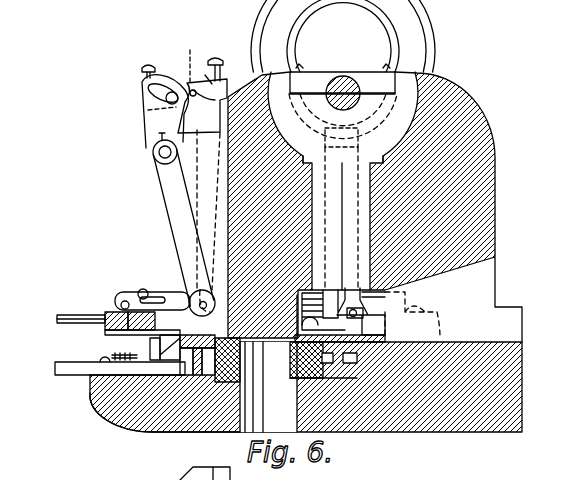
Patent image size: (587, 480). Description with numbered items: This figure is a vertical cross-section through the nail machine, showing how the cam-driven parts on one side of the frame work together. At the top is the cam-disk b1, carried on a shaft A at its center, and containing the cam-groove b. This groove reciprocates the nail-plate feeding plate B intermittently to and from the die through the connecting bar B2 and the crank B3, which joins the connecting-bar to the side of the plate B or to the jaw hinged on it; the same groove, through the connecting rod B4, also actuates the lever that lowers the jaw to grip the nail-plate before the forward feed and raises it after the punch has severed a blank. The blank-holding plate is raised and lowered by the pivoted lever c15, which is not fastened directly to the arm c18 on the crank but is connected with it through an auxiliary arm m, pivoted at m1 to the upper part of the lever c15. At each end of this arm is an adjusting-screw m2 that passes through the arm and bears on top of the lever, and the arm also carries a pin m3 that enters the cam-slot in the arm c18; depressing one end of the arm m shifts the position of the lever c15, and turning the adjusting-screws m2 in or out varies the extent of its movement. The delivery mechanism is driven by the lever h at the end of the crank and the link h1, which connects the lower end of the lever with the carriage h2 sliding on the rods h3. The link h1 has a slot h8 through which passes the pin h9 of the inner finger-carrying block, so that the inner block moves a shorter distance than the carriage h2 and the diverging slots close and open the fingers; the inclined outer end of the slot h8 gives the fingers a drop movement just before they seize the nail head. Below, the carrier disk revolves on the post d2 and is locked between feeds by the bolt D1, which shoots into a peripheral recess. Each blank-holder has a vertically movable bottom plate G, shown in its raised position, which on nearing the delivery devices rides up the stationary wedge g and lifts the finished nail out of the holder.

The cam-groove b is at (440, 62).
The cam-disk b1 is at (343, 36).
The shaft A is at (348, 84).
The plate B is at (405, 306).
The connecting bar B2 is at (343, 311).
The crank B3 is at (325, 226).
The connecting rod B4 is at (342, 209).
The lever c15 is at (202, 106).
The arm c18 is at (141, 97).
The arm m is at (204, 75).
The pivot m1 is at (196, 61).
The adjusting-screw m2 is at (189, 60).
The pin m3 is at (140, 112).
The lever h is at (187, 196).
The link h1 is at (120, 292).
The carriage h2 is at (103, 311).
The rods h3 is at (62, 313).
The slot h8 is at (160, 295).
The pin h9 is at (141, 289).
The plate G is at (210, 335).
The bolt D1 is at (93, 405).
The post d2 is at (137, 428).
The wedge g is at (173, 430).